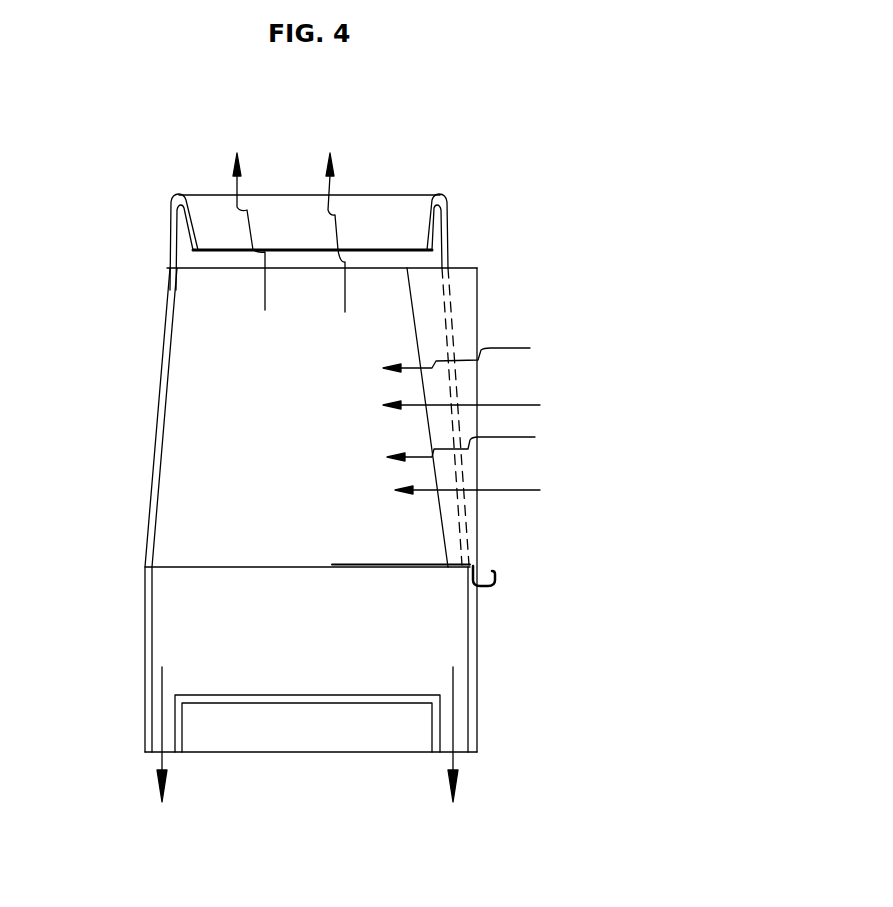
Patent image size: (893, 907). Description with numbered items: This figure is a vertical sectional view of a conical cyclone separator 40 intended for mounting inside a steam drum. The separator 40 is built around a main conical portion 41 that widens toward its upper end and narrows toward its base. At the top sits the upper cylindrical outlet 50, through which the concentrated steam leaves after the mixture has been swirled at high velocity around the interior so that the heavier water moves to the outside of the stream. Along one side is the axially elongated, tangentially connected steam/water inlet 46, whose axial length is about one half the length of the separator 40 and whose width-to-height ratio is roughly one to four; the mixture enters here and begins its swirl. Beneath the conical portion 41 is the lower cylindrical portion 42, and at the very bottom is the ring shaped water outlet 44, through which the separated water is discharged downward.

The cyclone separator 40 is at (467, 203).
The main conical portion 41 is at (153, 467).
The lower cylindrical portion 42 is at (474, 625).
The ring shaped water outlet 44 is at (157, 732).
The steam/water inlet 46 is at (463, 303).
The upper cylindrical outlet 50 is at (203, 218).